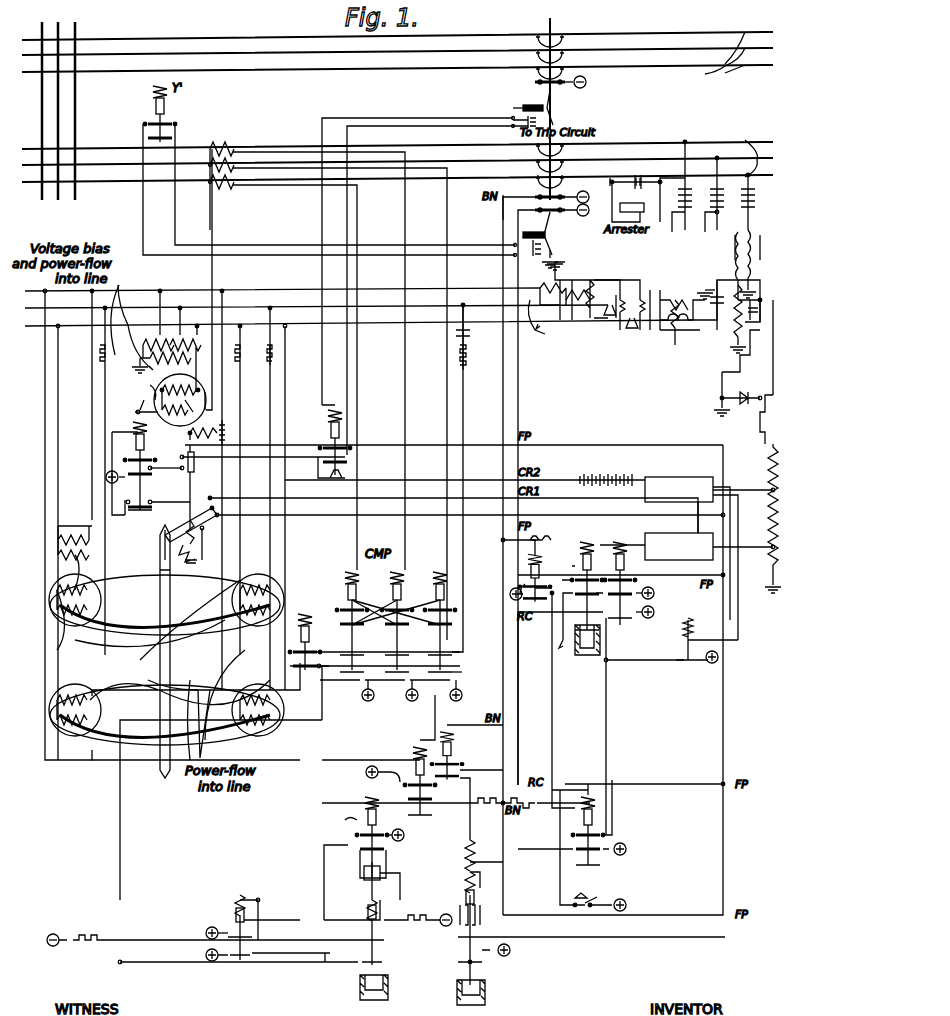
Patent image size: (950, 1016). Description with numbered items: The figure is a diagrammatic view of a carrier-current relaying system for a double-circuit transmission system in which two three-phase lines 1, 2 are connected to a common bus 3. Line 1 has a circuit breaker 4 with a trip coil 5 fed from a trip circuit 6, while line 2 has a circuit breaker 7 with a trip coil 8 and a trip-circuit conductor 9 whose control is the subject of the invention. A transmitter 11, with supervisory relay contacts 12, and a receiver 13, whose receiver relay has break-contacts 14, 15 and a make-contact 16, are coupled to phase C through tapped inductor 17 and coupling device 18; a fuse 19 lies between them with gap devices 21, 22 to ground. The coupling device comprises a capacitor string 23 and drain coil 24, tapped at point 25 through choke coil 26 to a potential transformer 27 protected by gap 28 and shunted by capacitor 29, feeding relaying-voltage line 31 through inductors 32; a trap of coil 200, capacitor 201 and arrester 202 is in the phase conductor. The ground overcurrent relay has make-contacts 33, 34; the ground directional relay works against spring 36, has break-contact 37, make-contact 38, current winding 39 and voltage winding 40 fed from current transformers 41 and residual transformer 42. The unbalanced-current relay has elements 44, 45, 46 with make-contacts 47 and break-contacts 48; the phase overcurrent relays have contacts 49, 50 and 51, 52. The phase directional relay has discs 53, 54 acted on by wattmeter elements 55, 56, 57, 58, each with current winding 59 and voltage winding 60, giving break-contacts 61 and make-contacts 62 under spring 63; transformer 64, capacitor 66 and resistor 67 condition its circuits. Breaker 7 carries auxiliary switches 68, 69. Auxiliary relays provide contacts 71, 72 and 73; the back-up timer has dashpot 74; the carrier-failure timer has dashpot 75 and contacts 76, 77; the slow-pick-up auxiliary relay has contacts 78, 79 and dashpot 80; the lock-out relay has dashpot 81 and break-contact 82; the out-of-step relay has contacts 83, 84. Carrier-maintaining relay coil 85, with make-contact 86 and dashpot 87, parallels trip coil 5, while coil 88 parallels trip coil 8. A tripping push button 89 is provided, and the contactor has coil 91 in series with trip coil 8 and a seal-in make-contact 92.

The three-phase line 1 is at (718, 62).
The three-phase line 2 is at (752, 140).
The common bus 3 is at (45, 115).
The circuit breaker 4 is at (556, 10).
The trip coil 5 is at (514, 107).
The trip circuit 6 is at (510, 125).
The circuit breaker 7 is at (552, 148).
The trip coil 8 is at (535, 256).
The trip-circuit conductor 9 is at (513, 365).
The transmitter 11 is at (682, 478).
The break-contacts 12 is at (691, 658).
The receiver 13 is at (668, 538).
The break-contact 14 is at (628, 578).
The break-contact 15 is at (634, 592).
The make-contact 16 is at (624, 620).
The inductor or autotransformer 17 is at (764, 465).
The coupling capacitor and capacitor potentiometer 18 is at (760, 233).
The fuse 19 is at (772, 380).
The gap device 21 is at (737, 372).
The gap device 22 is at (732, 404).
The string of capacitors 23 is at (755, 192).
The drain coil 24 is at (755, 242).
The intermediate tap point 25 is at (729, 210).
The choke coil 26 is at (746, 266).
The potential transformer 27 is at (734, 326).
The gap device 28 is at (758, 304).
The capacitor 29 is at (712, 295).
The three-phase relaying-voltage line 31 is at (548, 322).
The inductors 32 is at (681, 322).
The make-contact 33 is at (129, 466).
The make-contact 34 is at (145, 510).
The restraining spring 36 is at (213, 428).
The break-contact 37 is at (194, 462).
The make-contact 38 is at (182, 466).
The current winding 39 is at (183, 396).
The voltage winding 40 is at (165, 401).
The line-current transformers 41 is at (233, 140).
The residual potential transformer 42 is at (184, 350).
The unbalanced-current relay element 44 is at (348, 574).
The unbalanced-current relay element 45 is at (393, 574).
The unbalanced-current relay element 46 is at (436, 574).
The make-contact 47 is at (452, 672).
The break-contact 48 is at (452, 652).
The break-contact 49 is at (290, 642).
The make-contact 50 is at (307, 690).
The make-contact 51 is at (412, 762).
The make-contact 52 is at (418, 806).
The disc 53 is at (165, 582).
The disc 54 is at (165, 709).
The wattmeter element 55 is at (74, 609).
The wattmeter element 56 is at (258, 609).
The wattmeter element 57 is at (253, 728).
The wattmeter element 58 is at (58, 717).
The current-winding 59 is at (175, 654).
The voltage-winding 60 is at (166, 635).
The break-contacts 61 is at (195, 516).
The make-contacts 62 is at (202, 528).
The actuating spring 63 is at (184, 554).
The step-down transformer 64 is at (78, 540).
The capacitor 66 is at (469, 335).
The resistor 67 is at (467, 355).
The auxiliary switch 68 is at (555, 218).
The auxiliary switch 69 is at (538, 194).
The make-contact 71 is at (592, 858).
The break-contact 72 is at (604, 822).
The make-contact 73 is at (462, 780).
The dashpot 74 is at (488, 988).
The dashpot 75 is at (600, 686).
The break-contact 76 is at (576, 579).
The make-contact 77 is at (578, 594).
The make-contact 78 is at (365, 826).
The break-contact 79 is at (381, 842).
The dashpot 80 is at (386, 858).
The dashpot 81 is at (388, 1002).
The break-contact 82 is at (388, 941).
The make-contact 83 is at (236, 930).
The break-contact 84 is at (246, 960).
The operating coil 85 is at (330, 420).
The make-contact 86 is at (353, 454).
The dashpot 87 is at (351, 473).
The operating coil 88 is at (154, 86).
The tripping push button 89 is at (588, 898).
The operating coil 91 is at (533, 567).
The make-contact 92 is at (524, 586).
The inductance coil 200 is at (628, 165).
The capacitor 201 is at (647, 184).
The lightning arrester 202 is at (646, 207).